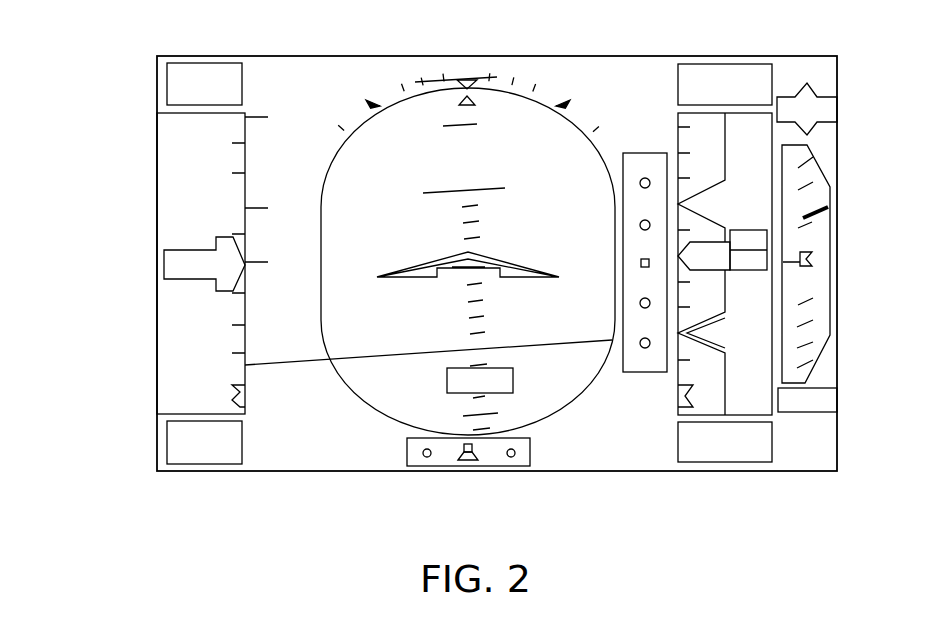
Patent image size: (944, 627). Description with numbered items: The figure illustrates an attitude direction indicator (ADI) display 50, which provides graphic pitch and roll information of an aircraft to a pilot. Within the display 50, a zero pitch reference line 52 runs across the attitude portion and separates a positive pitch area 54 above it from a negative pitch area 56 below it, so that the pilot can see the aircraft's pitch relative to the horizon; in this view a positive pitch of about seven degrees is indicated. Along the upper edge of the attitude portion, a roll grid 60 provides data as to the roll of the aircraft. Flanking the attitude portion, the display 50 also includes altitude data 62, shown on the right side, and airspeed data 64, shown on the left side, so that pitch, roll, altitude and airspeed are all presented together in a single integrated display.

The attitude direction indicator display 50 is at (90, 236).
The zero pitch reference line 52 is at (560, 345).
The positive pitch area 54 is at (584, 212).
The negative pitch area 56 is at (400, 393).
The roll grid 60 is at (460, 218).
The altitude data 62 is at (672, 477).
The airspeed data 64 is at (207, 471).